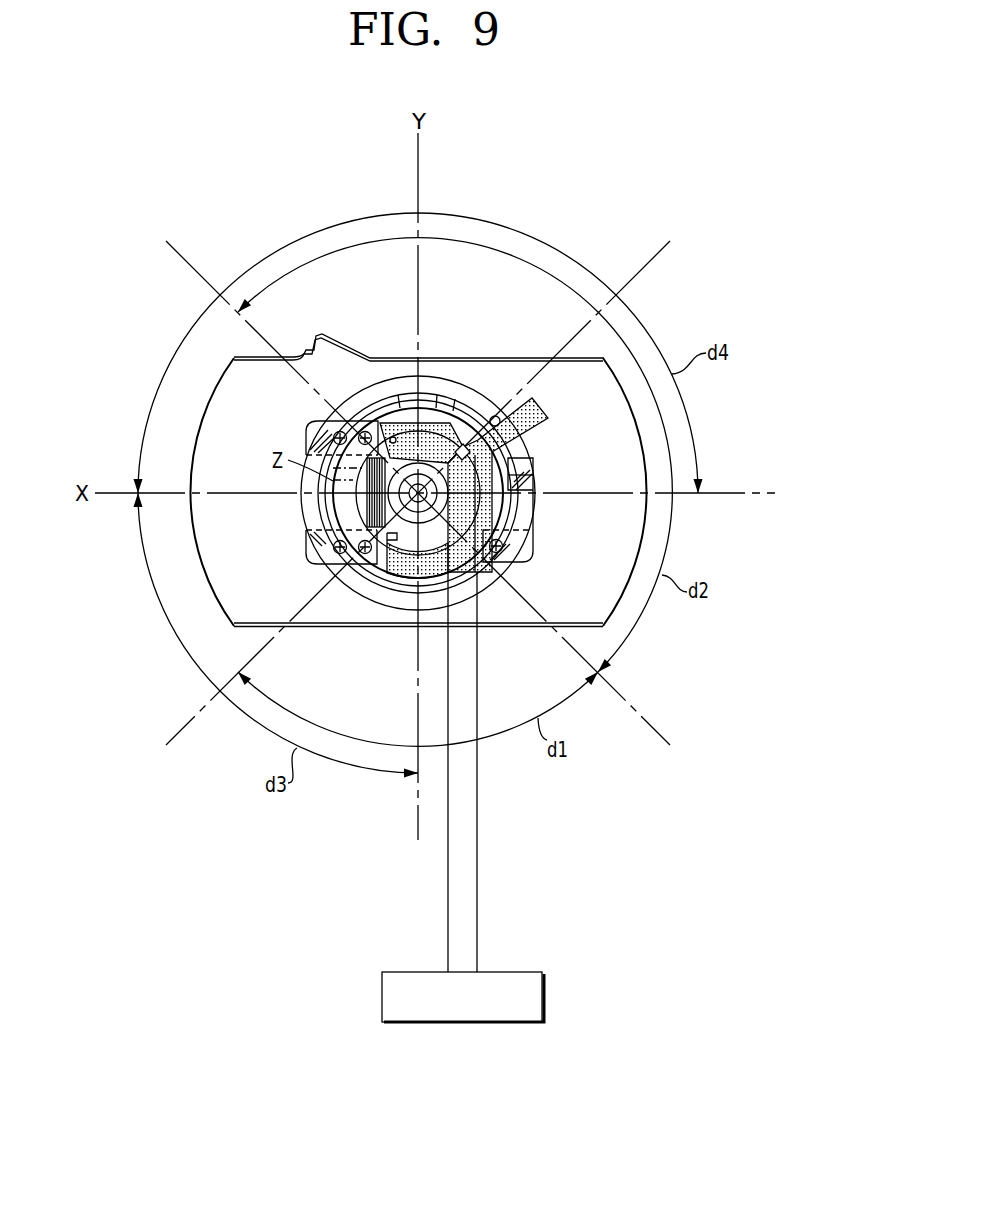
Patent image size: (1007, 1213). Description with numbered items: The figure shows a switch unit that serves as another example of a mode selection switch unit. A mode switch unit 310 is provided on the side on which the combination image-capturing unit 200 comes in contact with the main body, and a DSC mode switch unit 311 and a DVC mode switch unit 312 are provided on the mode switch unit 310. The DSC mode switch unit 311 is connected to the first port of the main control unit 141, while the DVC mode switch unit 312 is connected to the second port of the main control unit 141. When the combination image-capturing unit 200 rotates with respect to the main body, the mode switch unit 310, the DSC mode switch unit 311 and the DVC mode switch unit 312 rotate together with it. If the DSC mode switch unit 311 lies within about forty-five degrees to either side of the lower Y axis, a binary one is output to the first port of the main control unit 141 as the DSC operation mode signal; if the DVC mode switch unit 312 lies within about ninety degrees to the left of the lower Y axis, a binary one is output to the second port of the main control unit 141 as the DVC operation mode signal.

The combination image-capturing unit 200 is at (652, 417).
The mode switch unit 310 is at (478, 627).
The DSC mode switch unit 311 is at (400, 593).
The DVC mode switch unit 312 is at (486, 388).
The main control unit 141 is at (382, 994).